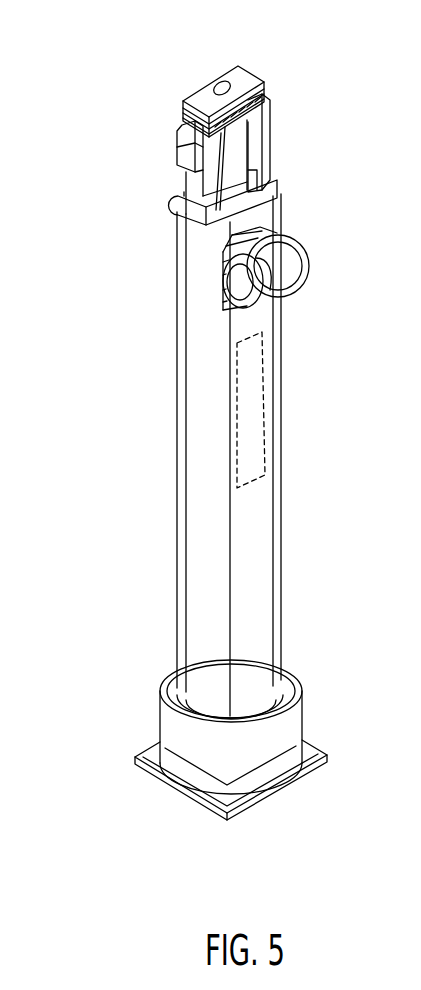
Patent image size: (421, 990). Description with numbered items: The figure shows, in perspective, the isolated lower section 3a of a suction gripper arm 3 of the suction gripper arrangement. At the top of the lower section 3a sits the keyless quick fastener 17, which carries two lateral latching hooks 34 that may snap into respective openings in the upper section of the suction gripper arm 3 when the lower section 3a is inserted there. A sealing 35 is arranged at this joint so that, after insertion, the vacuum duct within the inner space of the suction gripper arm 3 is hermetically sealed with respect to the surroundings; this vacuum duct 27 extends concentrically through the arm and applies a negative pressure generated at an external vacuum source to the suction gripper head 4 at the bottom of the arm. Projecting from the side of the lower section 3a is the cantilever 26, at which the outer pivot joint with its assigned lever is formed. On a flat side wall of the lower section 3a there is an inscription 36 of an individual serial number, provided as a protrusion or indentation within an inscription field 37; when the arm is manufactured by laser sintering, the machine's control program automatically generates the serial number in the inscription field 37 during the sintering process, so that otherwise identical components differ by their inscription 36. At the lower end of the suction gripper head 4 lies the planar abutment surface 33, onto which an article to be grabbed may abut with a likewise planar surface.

The suction gripper arm 3 is at (93, 139).
The lower section 3a is at (203, 440).
The suction gripper head 4 is at (292, 717).
The keyless quick fastener 17 is at (182, 130).
The cantilever 26 is at (290, 253).
The vacuum duct 27 is at (215, 84).
The abutment surface 33 is at (280, 792).
The latching hook 34 is at (269, 112).
The sealing 35 is at (263, 98).
The inscription 36 is at (255, 463).
The inscription field 37 is at (259, 333).